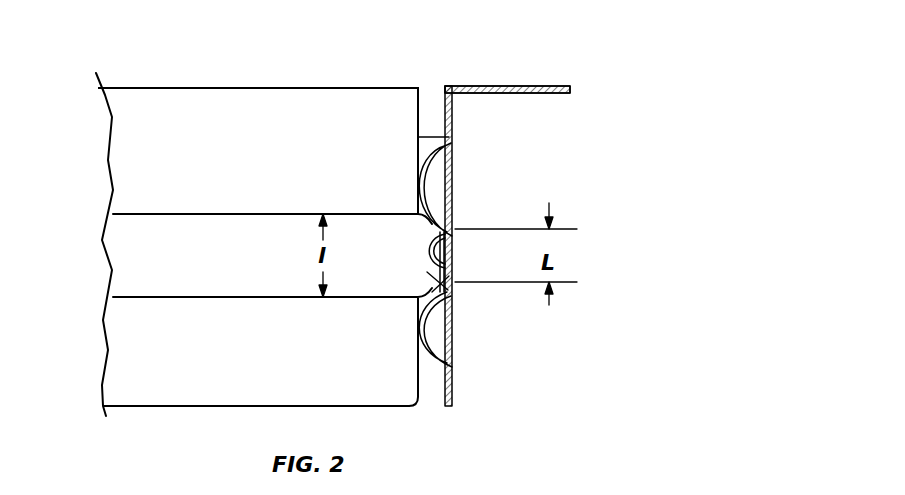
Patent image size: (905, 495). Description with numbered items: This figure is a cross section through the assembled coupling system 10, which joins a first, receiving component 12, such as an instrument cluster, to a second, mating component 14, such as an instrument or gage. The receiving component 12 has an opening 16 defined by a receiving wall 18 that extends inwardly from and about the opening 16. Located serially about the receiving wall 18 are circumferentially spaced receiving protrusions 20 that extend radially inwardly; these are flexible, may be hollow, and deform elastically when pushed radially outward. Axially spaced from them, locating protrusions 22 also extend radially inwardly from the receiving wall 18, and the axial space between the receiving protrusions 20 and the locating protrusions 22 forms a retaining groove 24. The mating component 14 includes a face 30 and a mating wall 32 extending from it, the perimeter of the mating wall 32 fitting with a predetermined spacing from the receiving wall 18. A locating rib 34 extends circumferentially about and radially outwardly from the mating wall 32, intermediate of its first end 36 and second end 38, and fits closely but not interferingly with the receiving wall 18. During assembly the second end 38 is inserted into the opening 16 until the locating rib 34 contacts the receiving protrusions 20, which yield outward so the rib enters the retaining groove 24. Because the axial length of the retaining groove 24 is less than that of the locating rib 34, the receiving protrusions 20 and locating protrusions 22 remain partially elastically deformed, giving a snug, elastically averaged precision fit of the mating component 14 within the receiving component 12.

The coupling system 10 is at (545, 330).
The receiving component 12 is at (463, 378).
The mating component 14 is at (160, 76).
The opening 16 is at (316, 72).
The receiving wall 18 is at (446, 106).
The receiving protrusions 20 is at (422, 185).
The locating protrusions 22 is at (423, 322).
The retaining groove 24 is at (440, 228).
The face 30 is at (253, 87).
The mating wall 32 is at (449, 137).
The locating rib 34 is at (452, 293).
The first end 36 is at (420, 86).
The second end 38 is at (393, 407).